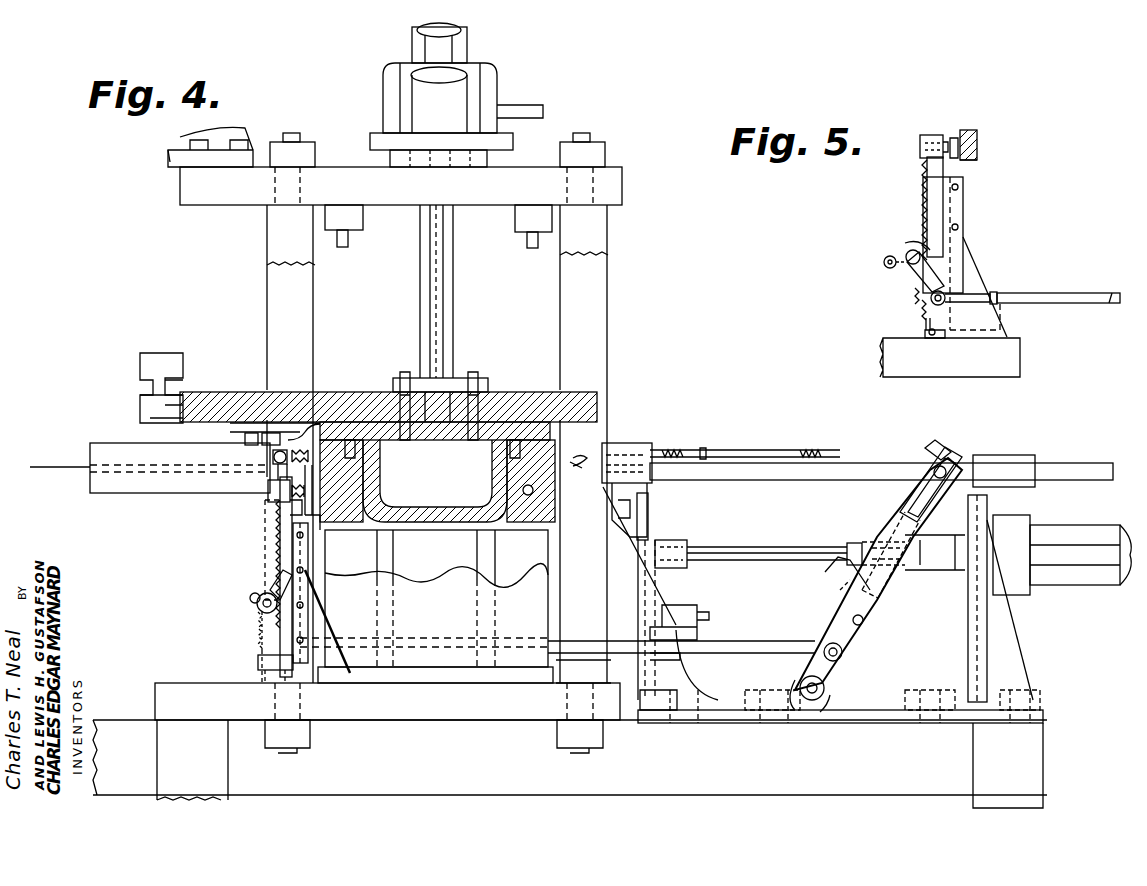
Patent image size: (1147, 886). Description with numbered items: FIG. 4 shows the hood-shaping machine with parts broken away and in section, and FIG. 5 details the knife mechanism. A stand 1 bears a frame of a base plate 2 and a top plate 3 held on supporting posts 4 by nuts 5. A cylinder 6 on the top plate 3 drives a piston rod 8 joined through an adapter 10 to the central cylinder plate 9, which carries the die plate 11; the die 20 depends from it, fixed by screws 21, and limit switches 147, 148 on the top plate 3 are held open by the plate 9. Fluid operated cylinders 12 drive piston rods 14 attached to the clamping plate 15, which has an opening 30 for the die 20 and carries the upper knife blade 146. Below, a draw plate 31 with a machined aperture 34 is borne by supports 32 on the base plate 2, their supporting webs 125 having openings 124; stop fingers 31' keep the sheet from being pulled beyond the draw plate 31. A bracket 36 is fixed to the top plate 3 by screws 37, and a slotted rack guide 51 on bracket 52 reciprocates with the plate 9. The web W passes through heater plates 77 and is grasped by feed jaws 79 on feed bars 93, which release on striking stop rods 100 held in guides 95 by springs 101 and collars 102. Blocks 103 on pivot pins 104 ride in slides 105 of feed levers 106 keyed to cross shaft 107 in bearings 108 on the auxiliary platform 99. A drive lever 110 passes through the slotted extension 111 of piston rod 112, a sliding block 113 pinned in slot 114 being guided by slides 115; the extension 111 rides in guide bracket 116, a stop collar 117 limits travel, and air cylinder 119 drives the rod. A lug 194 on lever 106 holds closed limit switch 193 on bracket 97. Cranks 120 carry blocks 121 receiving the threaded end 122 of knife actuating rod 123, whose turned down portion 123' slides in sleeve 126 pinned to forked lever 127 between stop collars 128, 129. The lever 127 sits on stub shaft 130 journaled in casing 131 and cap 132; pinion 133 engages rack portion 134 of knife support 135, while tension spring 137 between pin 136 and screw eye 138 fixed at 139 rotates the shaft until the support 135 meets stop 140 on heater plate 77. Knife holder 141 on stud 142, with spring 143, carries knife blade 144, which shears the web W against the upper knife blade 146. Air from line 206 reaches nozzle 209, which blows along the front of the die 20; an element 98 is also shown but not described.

In FIG. 4, the stand 1 is at (185, 745).
In FIG. 4, the base plate 2 is at (475, 710).
In FIG. 5, the base plate 2 is at (1010, 356).
In FIG. 4, the top plate 3 is at (242, 195).
In FIG. 4, the supporting posts 4 is at (283, 258).
In FIG. 4, the nuts 5 is at (292, 148).
In FIG. 4, the cylinder 6 is at (408, 87).
In FIG. 4, the piston rod 8 is at (468, 45).
In FIG. 4, the central cylinder plate 9 is at (597, 410).
In FIG. 4, the adapter 10 is at (425, 382).
In FIG. 4, the die plate 11 is at (548, 428).
In FIG. 4, the fluid operated cylinders 12 is at (425, 215).
In FIG. 4, the piston rods 14 is at (430, 242).
In FIG. 4, the clamping plate 15 is at (560, 460).
In FIG. 4, the die 20 is at (430, 478).
In FIG. 4, the screws 21 is at (400, 385).
In FIG. 4, the opening 30 is at (568, 405).
In FIG. 4, the draw plate 31 is at (531, 496).
In FIG. 4, the stop fingers 31' is at (574, 494).
In FIG. 4, the supports 32 is at (335, 585).
In FIG. 4, the machined aperture 34 is at (507, 487).
In FIG. 4, the right bracket 36 is at (232, 136).
In FIG. 4, the screws 37 is at (168, 152).
In FIG. 4, the slotted rack guide 51 is at (140, 358).
In FIG. 4, the bracket 52 is at (150, 402).
In FIG. 4, the heater plates 77 is at (108, 455).
In FIG. 4, the web W is at (65, 470).
In FIG. 4, the feed jaws 79 is at (580, 468).
In FIG. 4, the feed bars 93 is at (790, 478).
In FIG. 4, the guides 95 is at (626, 446).
In FIG. 4, the bracket 97 is at (645, 618).
In FIG. 4, the bracket 98 is at (985, 648).
In FIG. 4, the auxiliary platform 99 is at (880, 715).
In FIG. 4, the stop rods 100 is at (785, 448).
In FIG. 4, the springs 101 is at (680, 452).
In FIG. 4, the collars 102 is at (720, 452).
In FIG. 4, the blocks 103 is at (945, 465).
In FIG. 4, the pivot pins 104 is at (928, 460).
In FIG. 4, the slides 105 is at (912, 505).
In FIG. 4, the feed levers 106 is at (905, 528).
In FIG. 4, the cross shaft 107 is at (800, 684).
In FIG. 4, the bearings 108 is at (798, 715).
In FIG. 4, the drive lever 110 is at (880, 612).
In FIG. 4, the slotted extension 111 is at (740, 553).
In FIG. 4, the piston rod 112 is at (943, 560).
In FIG. 4, the sliding block 113 is at (888, 575).
In FIG. 4, the slot 114 is at (915, 545).
In FIG. 4, the slides 115 is at (855, 588).
In FIG. 4, the guide bracket 116 is at (680, 538).
In FIG. 4, the stop collar 117 is at (848, 545).
In FIG. 4, the air cylinder 119 is at (1100, 540).
In FIG. 4, the cranks 120 is at (845, 660).
In FIG. 4, the blocks 121 is at (850, 621).
In FIG. 4, the threaded end 122 is at (822, 648).
In FIG. 4, the knife actuating rod 123 is at (659, 628).
In FIG. 5, the knife actuating rod 123 is at (1058, 282).
In FIG. 4, the turned down portion 123' is at (346, 612).
In FIG. 5, the turned down portion 123' is at (991, 271).
In FIG. 4, the openings 124 is at (480, 628).
In FIG. 4, the supporting webs 125 is at (485, 548).
In FIG. 5, the sleeve 126 is at (950, 300).
In FIG. 5, the forked lever 127 is at (912, 290).
In FIG. 5, the stop collar 128 is at (920, 308).
In FIG. 5, the stop collar 129 is at (995, 293).
In FIG. 4, the stub shaft 130 is at (272, 588).
In FIG. 5, the stub shaft 130 is at (912, 262).
In FIG. 4, the casing 131 is at (290, 536).
In FIG. 5, the casing 131 is at (958, 197).
In FIG. 5, the cap 132 is at (908, 252).
In FIG. 5, the pinion 133 is at (920, 240).
In FIG. 4, the rack portion 134 is at (280, 510).
In FIG. 5, the rack portion 134 is at (928, 195).
In FIG. 4, the knife support 135 is at (268, 493).
In FIG. 5, the knife support 135 is at (928, 136).
In FIG. 4, the pin 136 is at (258, 595).
In FIG. 5, the pin 136 is at (884, 264).
In FIG. 4, the tension spring 137 is at (258, 622).
In FIG. 5, the tension spring 137 is at (925, 323).
In FIG. 4, the screw eye 138 is at (260, 662).
In FIG. 5, the screw eye 138 is at (930, 335).
In FIG. 4, the casing base anchor 139 is at (272, 683).
In FIG. 5, the casing base anchor 139 is at (935, 342).
In FIG. 4, the stop 140 is at (275, 470).
In FIG. 5, the knife holder 141 is at (975, 160).
In FIG. 4, the stud 142 is at (318, 535).
In FIG. 5, the stud 142 is at (956, 138).
In FIG. 5, the spring 143 is at (945, 140).
In FIG. 4, the knife blade 144 is at (318, 515).
In FIG. 5, the knife blade 144 is at (977, 143).
In FIG. 4, the upper knife blade 146 is at (375, 475).
In FIG. 4, the limit switch 147 is at (340, 210).
In FIG. 4, the limit switch 148 is at (528, 212).
In FIG. 4, the third limit switch 193 is at (685, 615).
In FIG. 4, the lug 194 is at (825, 568).
In FIG. 4, the line 206 is at (262, 445).
In FIG. 4, the nozzle 209 is at (375, 448).